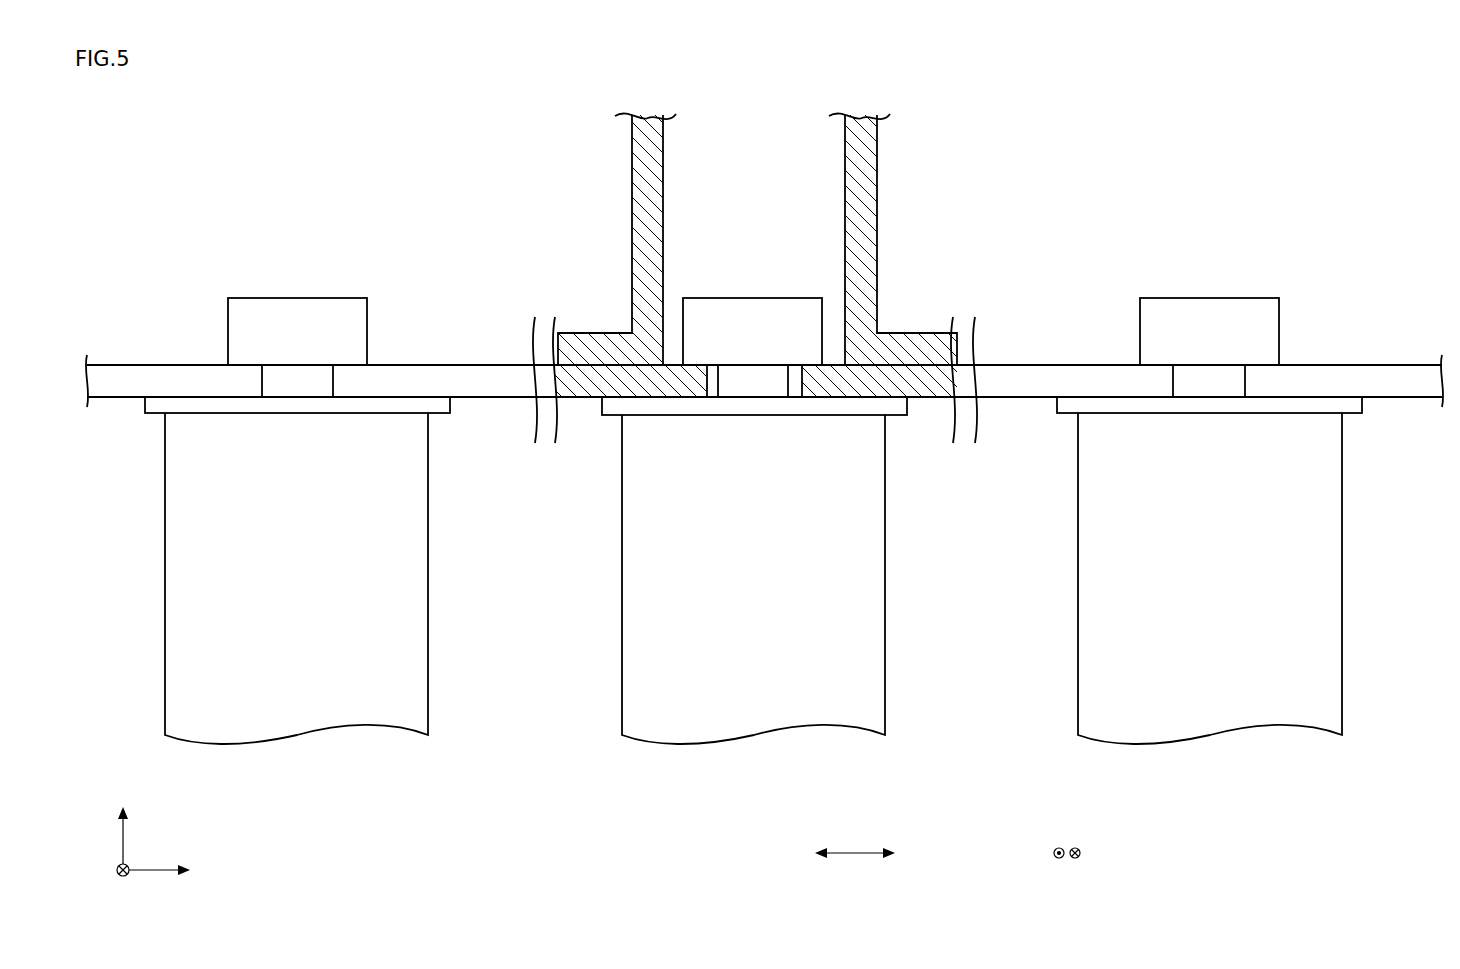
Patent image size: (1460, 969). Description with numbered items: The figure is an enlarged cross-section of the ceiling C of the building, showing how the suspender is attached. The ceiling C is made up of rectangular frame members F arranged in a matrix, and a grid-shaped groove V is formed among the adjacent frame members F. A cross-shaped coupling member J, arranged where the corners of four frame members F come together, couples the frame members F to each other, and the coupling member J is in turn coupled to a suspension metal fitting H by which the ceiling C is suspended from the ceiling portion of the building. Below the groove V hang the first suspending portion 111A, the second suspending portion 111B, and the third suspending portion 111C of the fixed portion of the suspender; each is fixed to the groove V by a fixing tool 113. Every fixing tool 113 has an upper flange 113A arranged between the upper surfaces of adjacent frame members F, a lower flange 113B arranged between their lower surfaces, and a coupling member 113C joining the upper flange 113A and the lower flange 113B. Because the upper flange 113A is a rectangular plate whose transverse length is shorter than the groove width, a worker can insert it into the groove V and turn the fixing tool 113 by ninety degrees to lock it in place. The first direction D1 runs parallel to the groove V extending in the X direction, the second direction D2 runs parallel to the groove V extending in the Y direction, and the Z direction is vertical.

The fixing tool 113 is at (721, 342).
The upper flange 113A is at (305, 310).
The lower flange 113B is at (320, 382).
The coupling member 113C is at (150, 405).
The first suspending portion 111A is at (303, 695).
The second suspending portion 111B is at (1200, 695).
The third suspending portion 111C is at (745, 695).
The ceiling C is at (1408, 355).
The frame member F is at (182, 365).
The groove V is at (140, 376).
The coupling member J is at (603, 333).
The suspension metal fitting H is at (868, 183).
The first direction D1 is at (1066, 870).
The second direction D2 is at (855, 870).
The X direction X is at (113, 884).
The Y direction Y is at (171, 869).
The Z direction Z is at (123, 819).